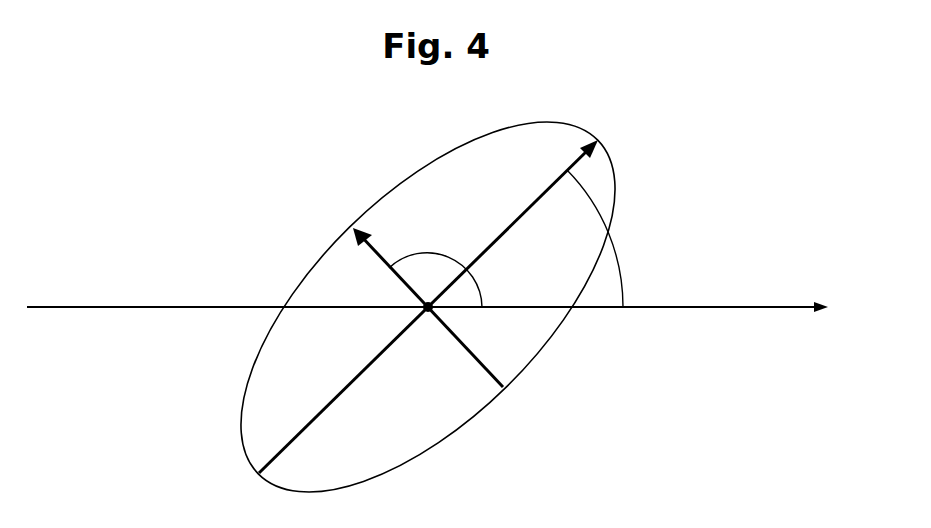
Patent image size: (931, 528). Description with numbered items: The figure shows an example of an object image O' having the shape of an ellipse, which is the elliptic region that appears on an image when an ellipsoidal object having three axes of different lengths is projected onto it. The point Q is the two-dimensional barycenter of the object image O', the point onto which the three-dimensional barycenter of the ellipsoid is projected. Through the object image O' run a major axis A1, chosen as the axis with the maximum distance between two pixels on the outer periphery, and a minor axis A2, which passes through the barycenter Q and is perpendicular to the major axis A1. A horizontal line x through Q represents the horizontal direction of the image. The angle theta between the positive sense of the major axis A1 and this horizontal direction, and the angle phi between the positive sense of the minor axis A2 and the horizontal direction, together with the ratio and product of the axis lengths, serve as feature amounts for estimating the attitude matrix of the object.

The object image O' is at (428, 294).
The major axis A1 is at (520, 210).
The minor axis A2 is at (472, 354).
The 2D barycenter Q is at (422, 311).
The x-axis x is at (436, 307).